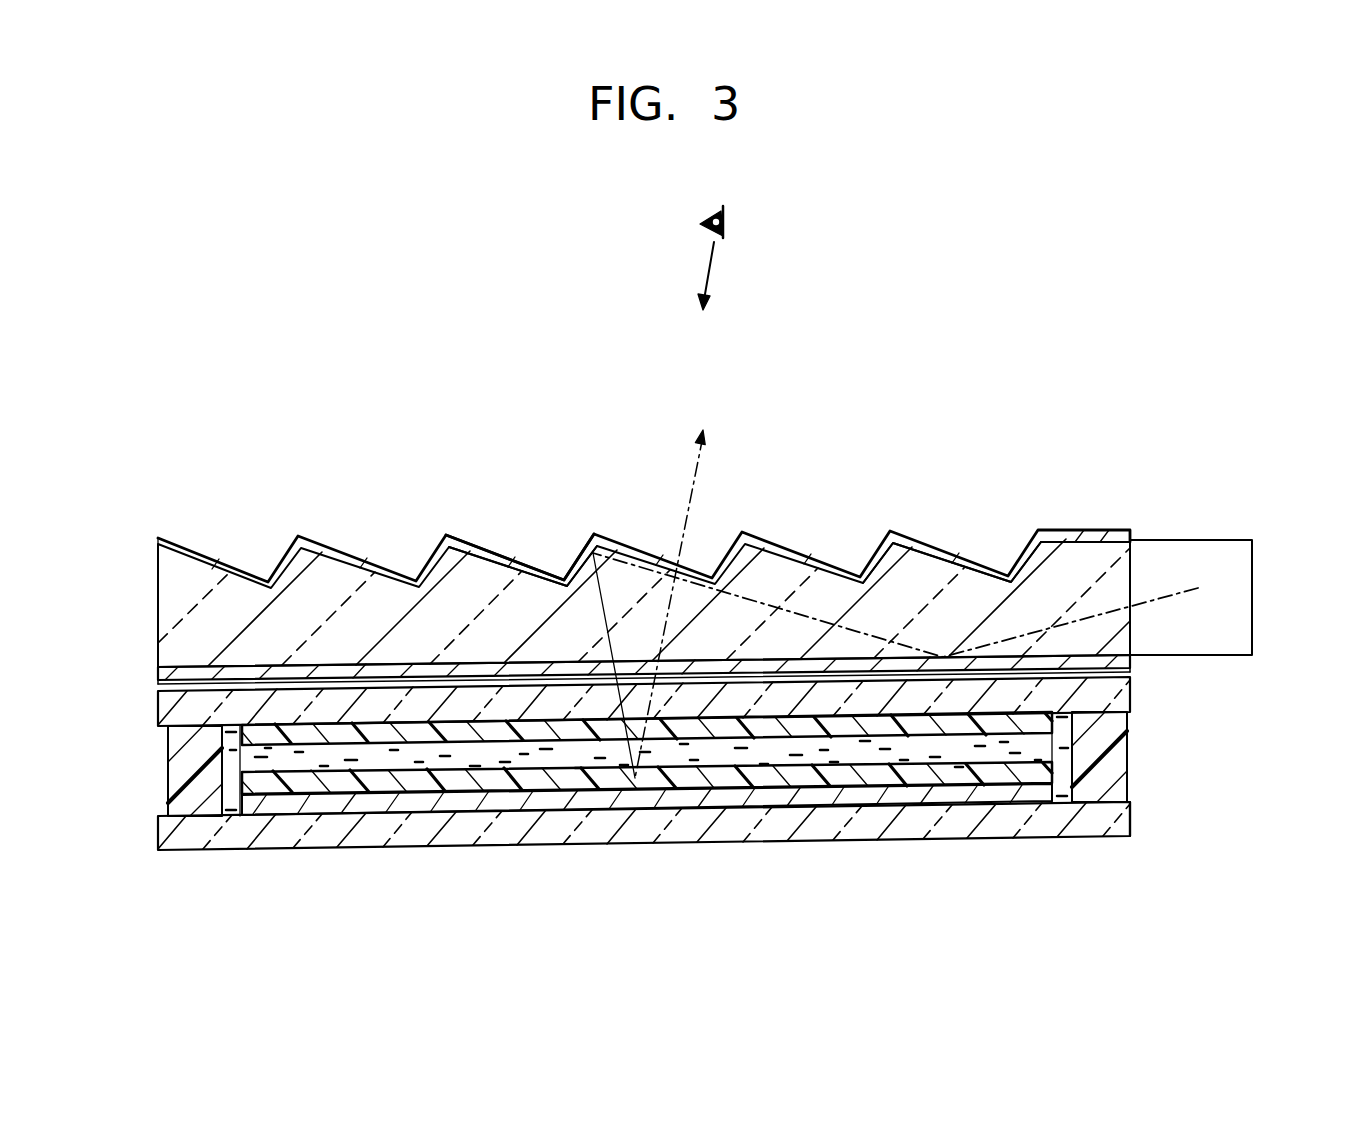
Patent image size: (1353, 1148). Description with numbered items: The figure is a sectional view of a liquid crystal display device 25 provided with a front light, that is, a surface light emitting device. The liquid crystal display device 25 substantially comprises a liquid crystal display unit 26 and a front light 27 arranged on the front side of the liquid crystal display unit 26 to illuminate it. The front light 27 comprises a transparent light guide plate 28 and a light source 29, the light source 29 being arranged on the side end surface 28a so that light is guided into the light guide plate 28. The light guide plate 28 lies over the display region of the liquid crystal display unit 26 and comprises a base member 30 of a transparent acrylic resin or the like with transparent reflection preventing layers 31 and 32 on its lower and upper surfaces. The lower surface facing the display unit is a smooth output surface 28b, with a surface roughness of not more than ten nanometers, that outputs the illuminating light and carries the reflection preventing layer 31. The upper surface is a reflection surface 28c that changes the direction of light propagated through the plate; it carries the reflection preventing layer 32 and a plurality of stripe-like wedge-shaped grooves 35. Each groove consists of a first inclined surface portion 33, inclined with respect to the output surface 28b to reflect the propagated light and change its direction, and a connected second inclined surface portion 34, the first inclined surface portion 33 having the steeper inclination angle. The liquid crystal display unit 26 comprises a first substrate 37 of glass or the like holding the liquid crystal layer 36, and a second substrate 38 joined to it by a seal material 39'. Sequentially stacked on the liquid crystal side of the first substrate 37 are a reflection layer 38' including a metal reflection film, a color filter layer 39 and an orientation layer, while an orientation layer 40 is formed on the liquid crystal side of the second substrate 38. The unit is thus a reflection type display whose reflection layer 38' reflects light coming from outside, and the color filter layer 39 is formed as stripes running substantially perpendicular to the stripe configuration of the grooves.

The liquid crystal display device 25 is at (1078, 402).
The liquid crystal display unit 26 is at (1135, 825).
The front light 27 is at (1257, 577).
The light guide plate 28 is at (1132, 637).
The side end surface 28a is at (1130, 590).
The output surface 28b is at (193, 668).
The reflection surface 28c is at (930, 572).
The light source 29 is at (1205, 560).
The base member 30 is at (180, 598).
The reflection preventing layer 31 is at (345, 670).
The reflection preventing layer 32 is at (248, 562).
The first inclined surface portion 33 is at (580, 560).
The second inclined surface portion 34 is at (505, 560).
The wedge-shaped grooves 35 is at (578, 492).
The liquid crystal layer 36 is at (1070, 753).
The first substrate 37 is at (197, 832).
The second substrate 38 is at (603, 702).
The reflection layer 38' is at (647, 808).
The color filter layer 39 is at (647, 833).
The seal material 39' is at (723, 792).
The orientation layer 40 is at (878, 727).